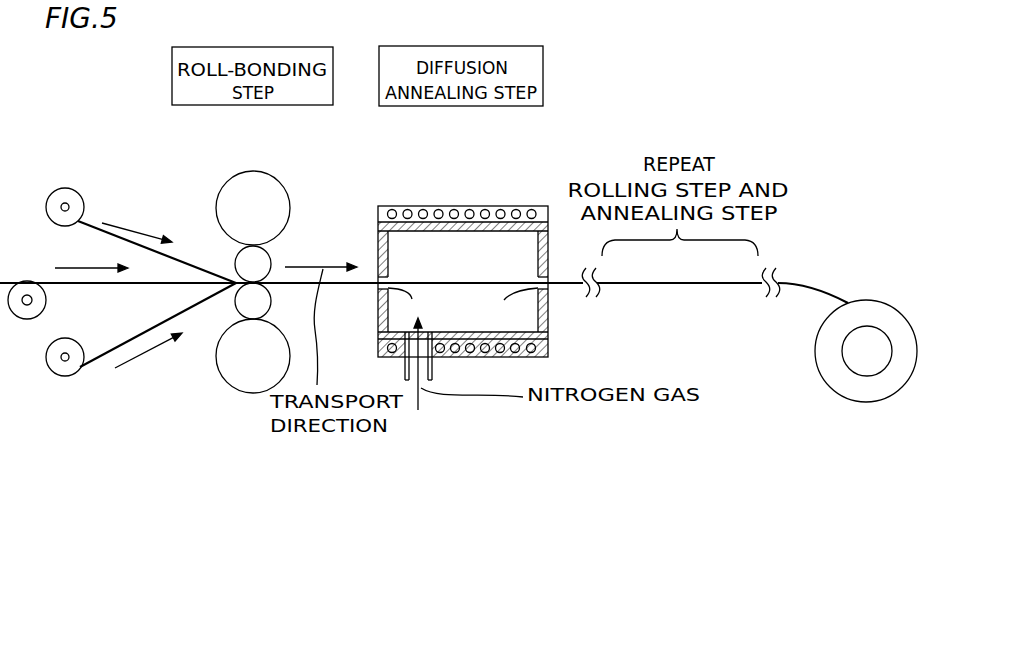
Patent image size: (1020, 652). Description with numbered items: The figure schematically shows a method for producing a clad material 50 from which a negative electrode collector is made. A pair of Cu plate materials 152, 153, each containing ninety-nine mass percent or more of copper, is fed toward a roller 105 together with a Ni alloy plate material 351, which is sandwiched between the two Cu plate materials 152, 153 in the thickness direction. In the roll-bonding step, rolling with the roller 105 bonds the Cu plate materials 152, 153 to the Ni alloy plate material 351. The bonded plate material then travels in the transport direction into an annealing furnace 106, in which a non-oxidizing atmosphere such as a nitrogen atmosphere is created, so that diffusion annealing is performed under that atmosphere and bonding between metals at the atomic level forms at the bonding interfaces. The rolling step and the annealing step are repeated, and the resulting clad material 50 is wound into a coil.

The Cu plate material 152 is at (62, 188).
The Cu plate material 153 is at (65, 376).
The Ni alloy plate material 351 is at (22, 280).
The roller 105 is at (253, 171).
The annealing furnace 106 is at (462, 205).
The clad material 50 is at (873, 300).